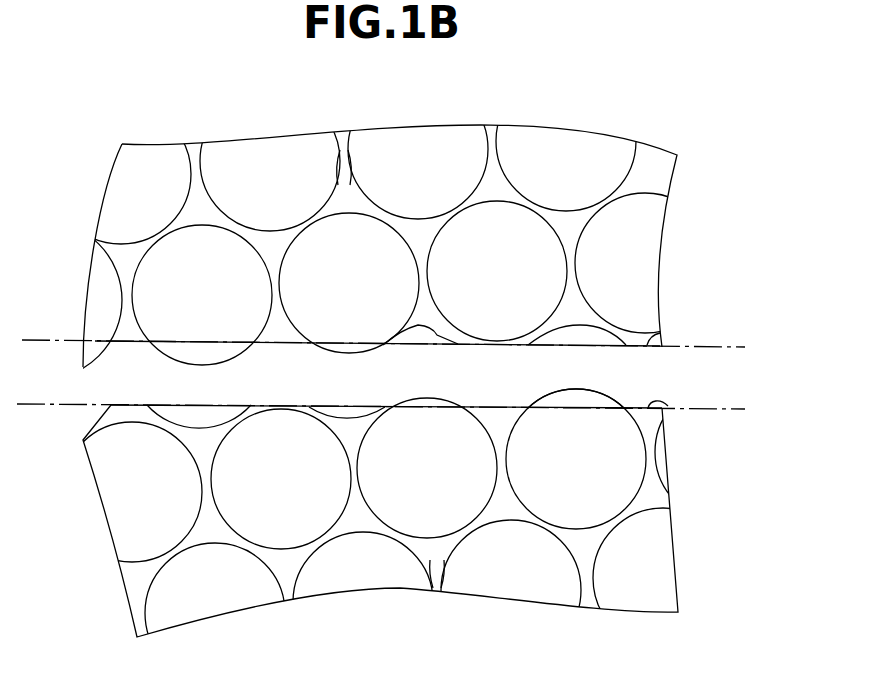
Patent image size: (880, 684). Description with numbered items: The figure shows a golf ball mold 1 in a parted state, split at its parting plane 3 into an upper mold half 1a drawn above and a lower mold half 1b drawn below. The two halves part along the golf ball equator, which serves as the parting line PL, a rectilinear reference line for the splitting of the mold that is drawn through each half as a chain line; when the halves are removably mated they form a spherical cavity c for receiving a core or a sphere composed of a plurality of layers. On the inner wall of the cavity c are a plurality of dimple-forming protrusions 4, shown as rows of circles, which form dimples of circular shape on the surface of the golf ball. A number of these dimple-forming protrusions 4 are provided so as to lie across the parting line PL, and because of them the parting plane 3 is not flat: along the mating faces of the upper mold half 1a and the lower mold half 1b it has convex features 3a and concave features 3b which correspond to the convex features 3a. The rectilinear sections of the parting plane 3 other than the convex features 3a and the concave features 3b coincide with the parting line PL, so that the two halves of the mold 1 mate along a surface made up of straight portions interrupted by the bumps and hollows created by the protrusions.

The golf ball mold 1 is at (689, 131).
The upper mold half 1a is at (93, 237).
The lower mold half 1b is at (118, 547).
The parting plane 3 is at (648, 346).
The convex features 3a is at (592, 392).
The concave features 3b is at (577, 332).
The dimple-forming protrusions 4 is at (255, 167).
The spherical cavity c is at (342, 146).
The parting line PL is at (68, 340).